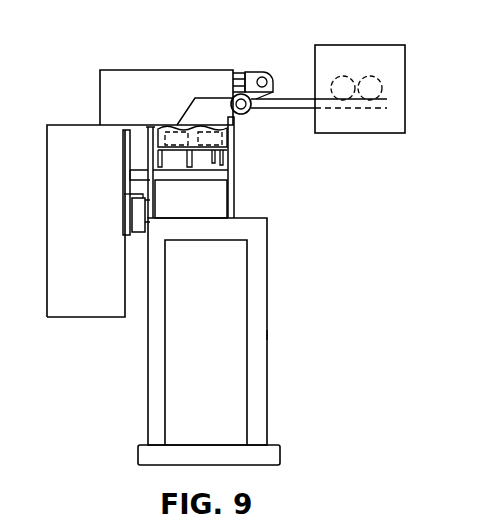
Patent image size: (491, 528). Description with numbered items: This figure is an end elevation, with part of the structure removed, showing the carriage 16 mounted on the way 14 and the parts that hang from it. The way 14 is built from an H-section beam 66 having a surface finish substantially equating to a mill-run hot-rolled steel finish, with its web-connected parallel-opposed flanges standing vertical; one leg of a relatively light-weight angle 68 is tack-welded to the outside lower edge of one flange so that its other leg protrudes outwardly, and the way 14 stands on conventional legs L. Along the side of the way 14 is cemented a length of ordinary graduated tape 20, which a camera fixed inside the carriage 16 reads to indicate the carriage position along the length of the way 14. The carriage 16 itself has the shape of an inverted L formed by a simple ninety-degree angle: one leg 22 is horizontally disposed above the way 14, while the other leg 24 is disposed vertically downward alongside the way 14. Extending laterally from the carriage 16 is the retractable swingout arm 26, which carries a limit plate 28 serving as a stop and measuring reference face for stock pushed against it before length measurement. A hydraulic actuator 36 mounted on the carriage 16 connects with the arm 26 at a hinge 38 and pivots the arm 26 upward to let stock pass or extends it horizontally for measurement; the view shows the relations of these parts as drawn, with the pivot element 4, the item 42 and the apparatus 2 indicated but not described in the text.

The carriage 16 is at (69, 123).
The graduated tape 20 is at (124, 170).
The way 14 is at (234, 205).
The leg 22 is at (236, 123).
The H-section beam 66 is at (153, 200).
The leg 24 is at (121, 197).
The angle 68 is at (124, 194).
The hydraulic actuator 36 is at (253, 68).
The hinge 38 is at (267, 71).
The pivot roller 4 is at (251, 112).
The swingout arm 26 is at (292, 92).
The limit plate 28 is at (405, 125).
The rolls 42 is at (380, 110).
The legs L is at (267, 333).
The apparatus 2 is at (473, 2).